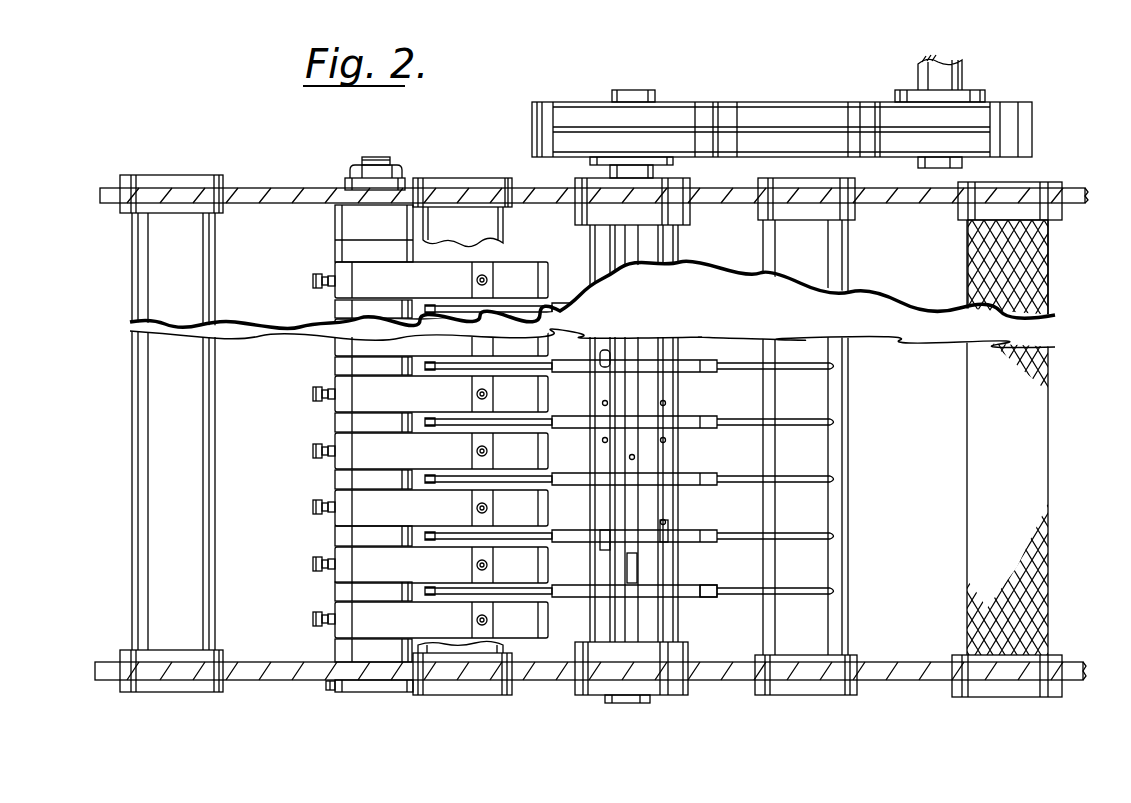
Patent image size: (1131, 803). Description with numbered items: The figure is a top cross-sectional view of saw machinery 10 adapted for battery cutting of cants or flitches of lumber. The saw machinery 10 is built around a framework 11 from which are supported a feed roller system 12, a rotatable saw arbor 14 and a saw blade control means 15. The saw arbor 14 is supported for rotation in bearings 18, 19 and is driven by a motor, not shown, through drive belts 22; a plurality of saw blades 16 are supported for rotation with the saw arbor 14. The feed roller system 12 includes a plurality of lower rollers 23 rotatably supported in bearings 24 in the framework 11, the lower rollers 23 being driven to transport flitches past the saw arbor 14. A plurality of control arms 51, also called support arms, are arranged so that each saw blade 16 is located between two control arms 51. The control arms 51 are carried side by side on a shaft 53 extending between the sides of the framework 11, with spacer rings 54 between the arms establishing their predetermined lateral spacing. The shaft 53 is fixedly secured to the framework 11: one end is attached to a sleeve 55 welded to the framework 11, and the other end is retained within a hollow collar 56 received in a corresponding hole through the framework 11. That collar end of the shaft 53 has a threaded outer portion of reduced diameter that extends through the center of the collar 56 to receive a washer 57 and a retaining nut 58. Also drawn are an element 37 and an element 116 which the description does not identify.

The saw machinery 10 is at (248, 138).
The framework 11 is at (268, 206).
The feed roller system 12 is at (122, 532).
The saw arbor 14 is at (632, 640).
The saw blade control means 15 is at (358, 626).
The saw blades 16 is at (746, 374).
The bearing 18 is at (663, 690).
The bearing 19 is at (688, 192).
The drive belts 22 is at (787, 125).
The lower rollers 23 is at (968, 256).
The bearings 24 is at (1030, 186).
The rod end fitting 37 is at (705, 582).
The control arms 51 is at (360, 447).
The shaft 53 is at (376, 157).
The spacer rings 54 is at (338, 365).
The sleeve 55 is at (330, 690).
The hollow collar 56 is at (415, 178).
The washer 57 is at (345, 184).
The retaining nut 58 is at (355, 168).
The bottom plate 116 is at (382, 692).